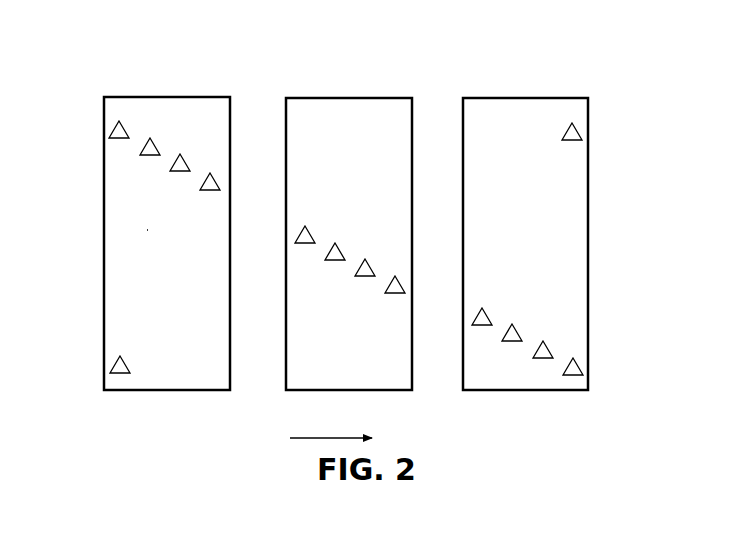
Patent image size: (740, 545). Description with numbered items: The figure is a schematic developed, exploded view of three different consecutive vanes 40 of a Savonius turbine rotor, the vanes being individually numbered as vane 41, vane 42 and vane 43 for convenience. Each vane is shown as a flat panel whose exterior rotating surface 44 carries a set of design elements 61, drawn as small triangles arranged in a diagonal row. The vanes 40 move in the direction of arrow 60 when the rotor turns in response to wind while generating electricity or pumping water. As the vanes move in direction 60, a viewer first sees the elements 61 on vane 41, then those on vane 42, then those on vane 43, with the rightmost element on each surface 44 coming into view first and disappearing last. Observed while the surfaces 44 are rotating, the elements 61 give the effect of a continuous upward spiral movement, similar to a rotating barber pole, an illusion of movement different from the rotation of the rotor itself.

The vanes 40 is at (355, 231).
The first vane 41 is at (588, 225).
The second vane 42 is at (305, 360).
The third vane 43 is at (120, 280).
The exterior rotating surface 44 is at (151, 233).
The arrow 60 is at (308, 440).
The design elements 61 is at (207, 168).